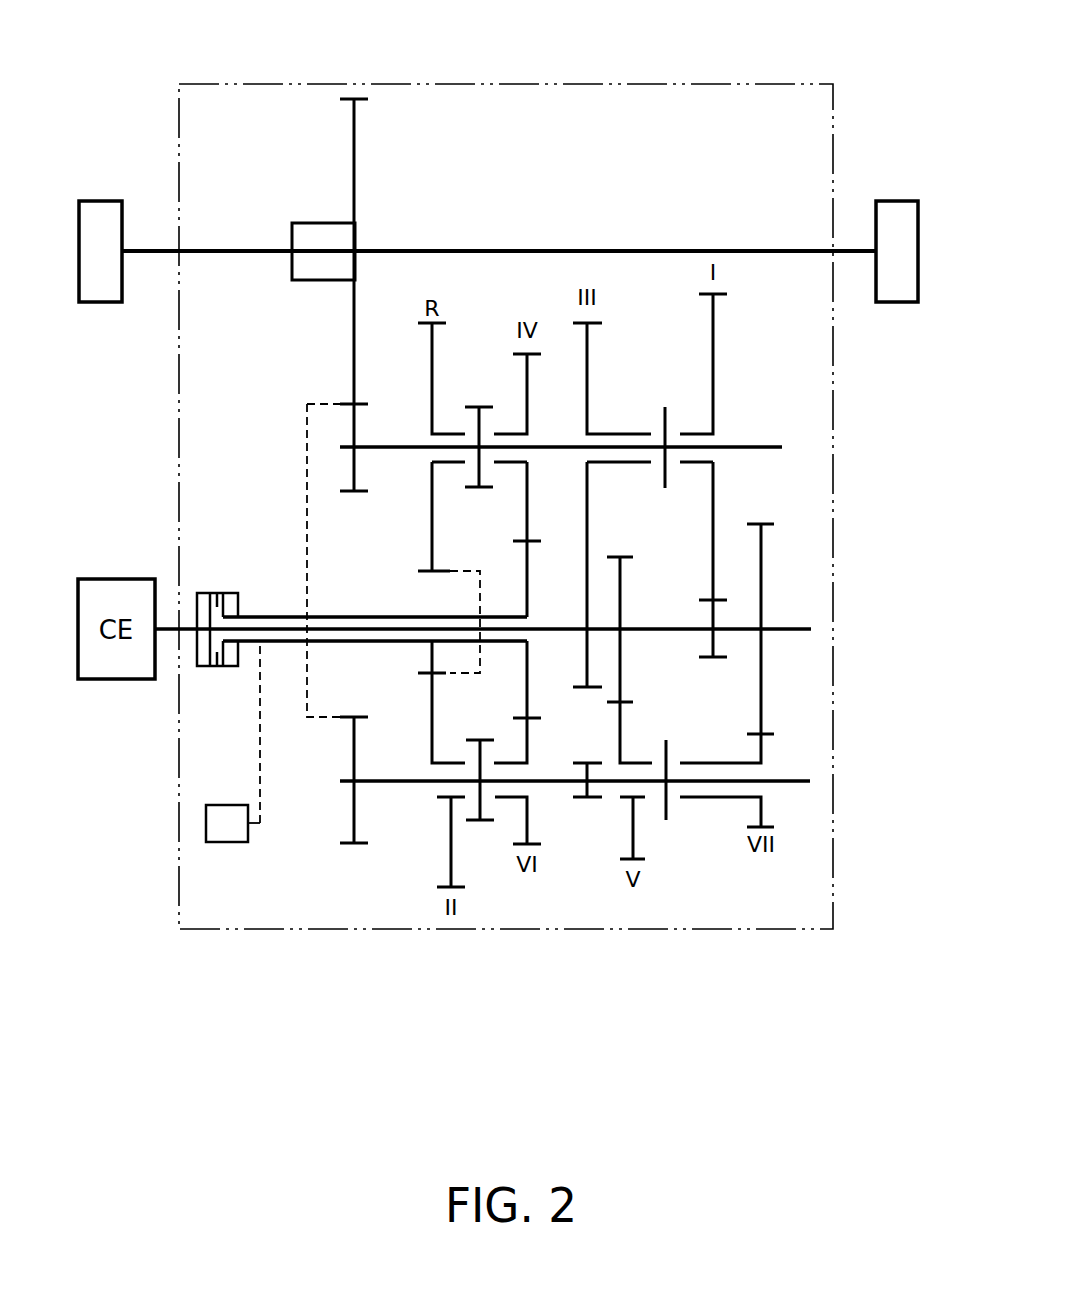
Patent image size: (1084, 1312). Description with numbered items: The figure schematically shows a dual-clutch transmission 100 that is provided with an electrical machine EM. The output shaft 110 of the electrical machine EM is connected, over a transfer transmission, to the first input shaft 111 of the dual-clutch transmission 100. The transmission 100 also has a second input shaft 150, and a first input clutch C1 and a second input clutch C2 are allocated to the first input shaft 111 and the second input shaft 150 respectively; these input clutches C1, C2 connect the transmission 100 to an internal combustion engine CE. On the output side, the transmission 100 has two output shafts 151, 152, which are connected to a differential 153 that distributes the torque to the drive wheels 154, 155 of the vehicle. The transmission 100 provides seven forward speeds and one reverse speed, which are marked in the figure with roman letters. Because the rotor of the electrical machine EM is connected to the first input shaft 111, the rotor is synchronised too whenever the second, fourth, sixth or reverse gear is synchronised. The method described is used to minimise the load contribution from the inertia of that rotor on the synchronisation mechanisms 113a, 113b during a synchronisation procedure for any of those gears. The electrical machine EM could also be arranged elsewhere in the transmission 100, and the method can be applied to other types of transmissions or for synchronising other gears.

The dual-clutch transmission 100 is at (371, 84).
The output shaft 110 is at (260, 795).
The first input shaft 111 is at (294, 631).
The synchronisation mechanism 113a is at (478, 405).
The synchronisation mechanism 113b is at (480, 822).
The second input shaft 150 is at (270, 642).
The output shaft 151 is at (810, 781).
The output shaft 152 is at (782, 447).
The differential 153 is at (251, 250).
The drive wheel 154 is at (95, 227).
The drive wheel 155 is at (898, 225).
The first input clutch C1 is at (233, 594).
The second input clutch C2 is at (196, 598).